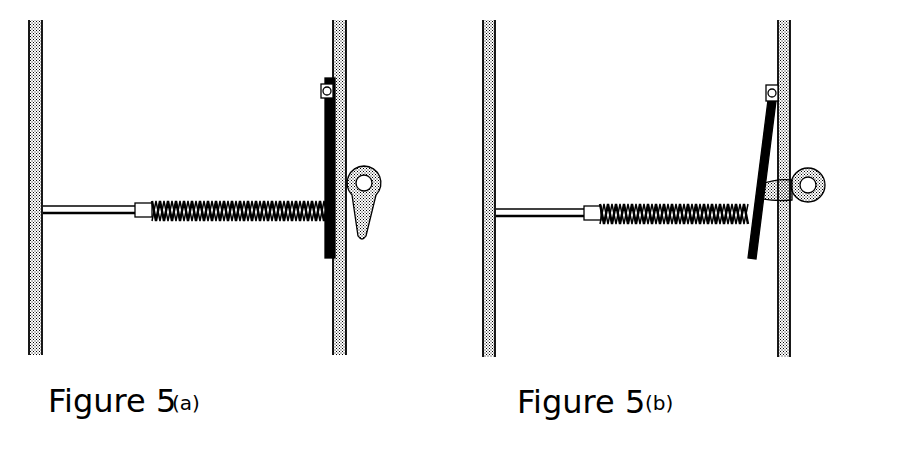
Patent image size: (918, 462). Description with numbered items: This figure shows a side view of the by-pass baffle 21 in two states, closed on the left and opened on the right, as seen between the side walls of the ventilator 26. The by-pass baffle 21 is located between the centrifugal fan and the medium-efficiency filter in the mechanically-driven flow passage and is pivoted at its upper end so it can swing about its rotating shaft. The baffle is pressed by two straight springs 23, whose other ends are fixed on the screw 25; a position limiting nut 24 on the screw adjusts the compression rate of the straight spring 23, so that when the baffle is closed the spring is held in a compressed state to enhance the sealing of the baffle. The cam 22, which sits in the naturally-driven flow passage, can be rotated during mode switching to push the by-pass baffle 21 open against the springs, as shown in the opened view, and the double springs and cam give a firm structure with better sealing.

In FIG. 5B, the by-pass baffle 21 is at (760, 165).
In FIG. 5A, the cam 22 is at (355, 200).
In FIG. 5A, the straight spring 23 is at (240, 211).
In FIG. 5B, the straight spring 23 is at (638, 222).
In FIG. 5B, the position limiting nut 24 is at (595, 212).
In FIG. 5A, the screw 25 is at (80, 210).
In FIG. 5A, the side walls of the ventilator 26 is at (337, 52).
In FIG. 5B, the side walls of the ventilator 26 is at (636, 188).